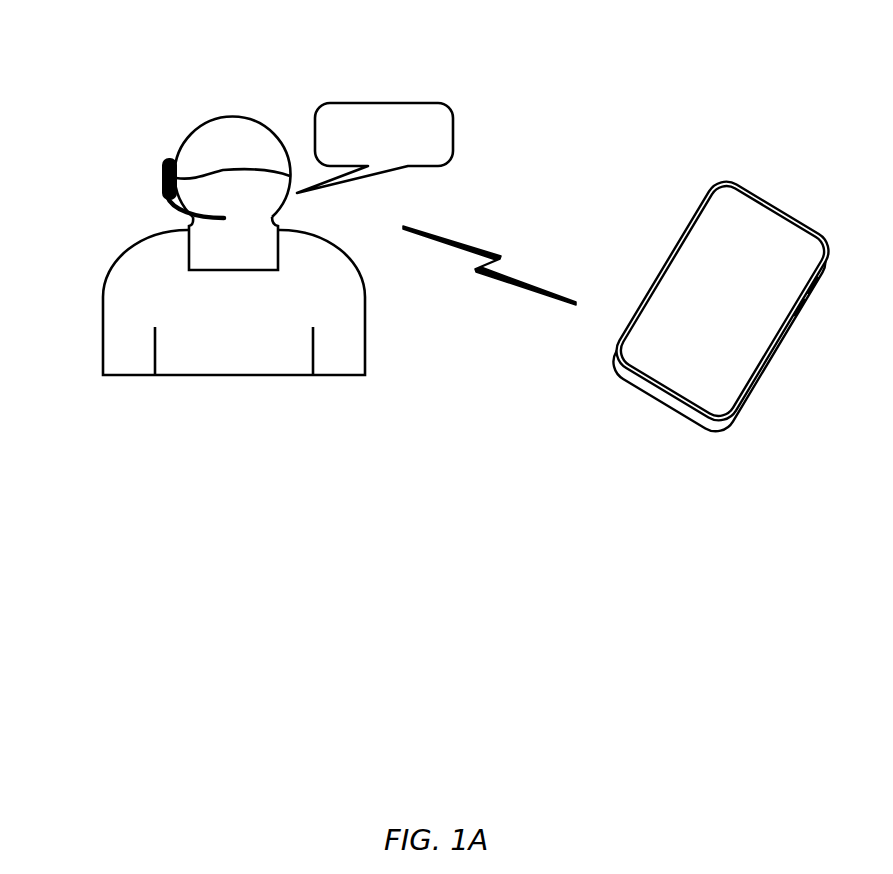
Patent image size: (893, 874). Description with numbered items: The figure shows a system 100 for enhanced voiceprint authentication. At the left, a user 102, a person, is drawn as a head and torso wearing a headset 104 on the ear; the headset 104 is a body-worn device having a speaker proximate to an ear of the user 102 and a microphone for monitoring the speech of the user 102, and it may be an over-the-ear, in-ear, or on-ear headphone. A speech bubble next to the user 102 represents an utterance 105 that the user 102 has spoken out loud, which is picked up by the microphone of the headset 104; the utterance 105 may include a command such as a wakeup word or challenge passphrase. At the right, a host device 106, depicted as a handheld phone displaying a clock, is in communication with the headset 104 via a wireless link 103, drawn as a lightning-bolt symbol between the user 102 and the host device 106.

The system 100 is at (100, 468).
The user 102 is at (298, 97).
The wireless link 103 is at (483, 273).
The headset 104 is at (164, 160).
The utterance 105 is at (453, 135).
The host device 106 is at (688, 225).